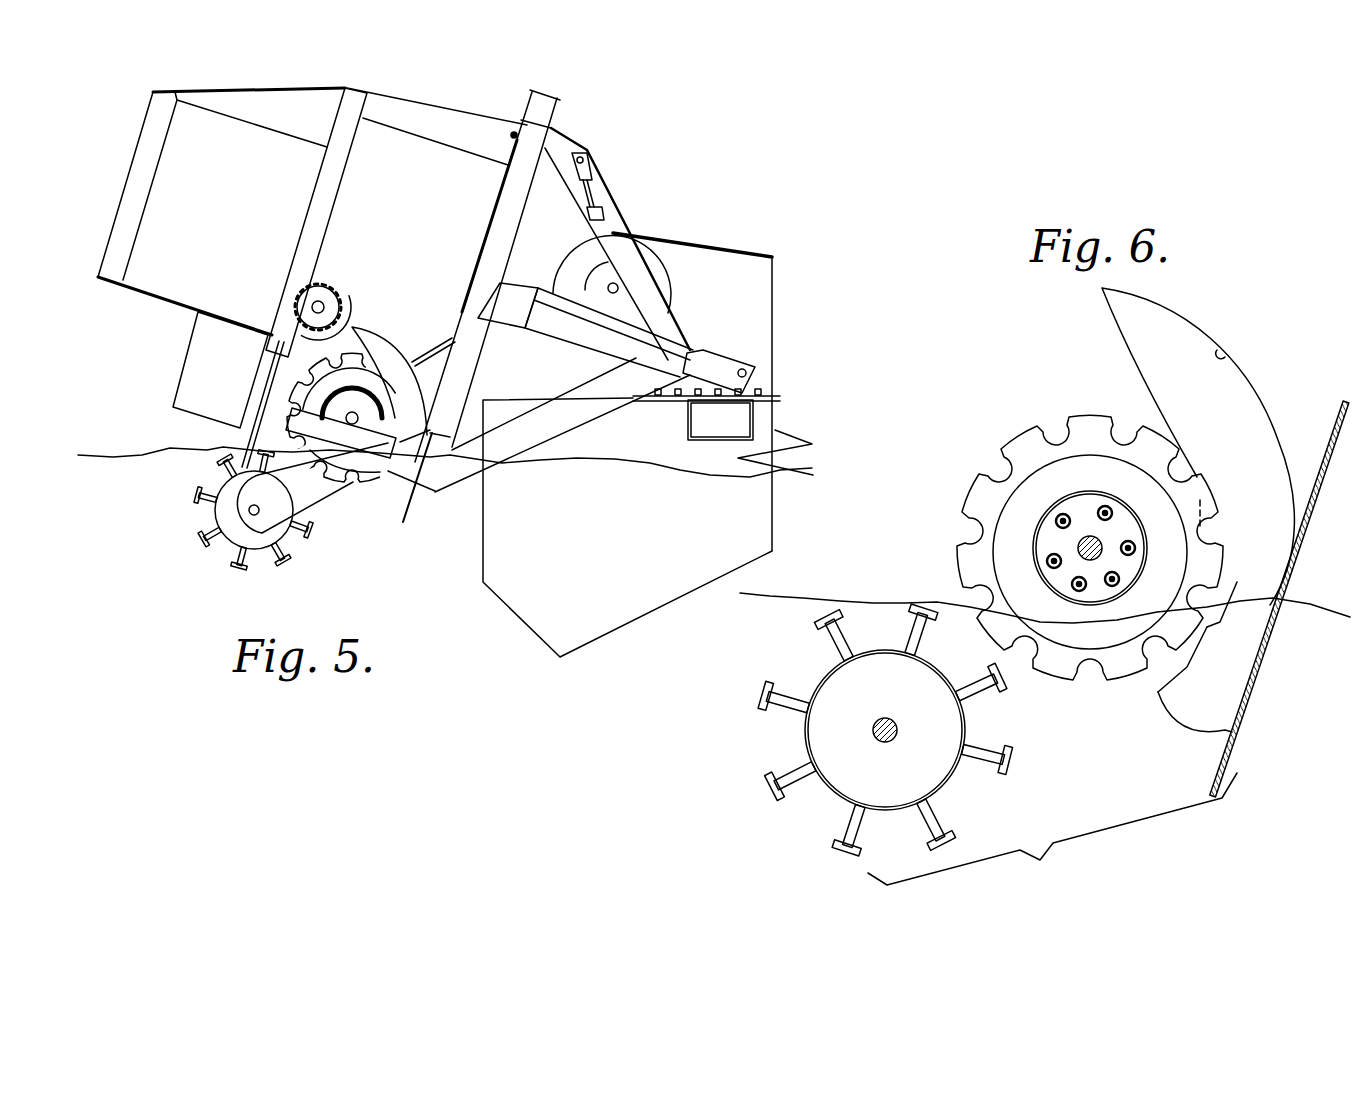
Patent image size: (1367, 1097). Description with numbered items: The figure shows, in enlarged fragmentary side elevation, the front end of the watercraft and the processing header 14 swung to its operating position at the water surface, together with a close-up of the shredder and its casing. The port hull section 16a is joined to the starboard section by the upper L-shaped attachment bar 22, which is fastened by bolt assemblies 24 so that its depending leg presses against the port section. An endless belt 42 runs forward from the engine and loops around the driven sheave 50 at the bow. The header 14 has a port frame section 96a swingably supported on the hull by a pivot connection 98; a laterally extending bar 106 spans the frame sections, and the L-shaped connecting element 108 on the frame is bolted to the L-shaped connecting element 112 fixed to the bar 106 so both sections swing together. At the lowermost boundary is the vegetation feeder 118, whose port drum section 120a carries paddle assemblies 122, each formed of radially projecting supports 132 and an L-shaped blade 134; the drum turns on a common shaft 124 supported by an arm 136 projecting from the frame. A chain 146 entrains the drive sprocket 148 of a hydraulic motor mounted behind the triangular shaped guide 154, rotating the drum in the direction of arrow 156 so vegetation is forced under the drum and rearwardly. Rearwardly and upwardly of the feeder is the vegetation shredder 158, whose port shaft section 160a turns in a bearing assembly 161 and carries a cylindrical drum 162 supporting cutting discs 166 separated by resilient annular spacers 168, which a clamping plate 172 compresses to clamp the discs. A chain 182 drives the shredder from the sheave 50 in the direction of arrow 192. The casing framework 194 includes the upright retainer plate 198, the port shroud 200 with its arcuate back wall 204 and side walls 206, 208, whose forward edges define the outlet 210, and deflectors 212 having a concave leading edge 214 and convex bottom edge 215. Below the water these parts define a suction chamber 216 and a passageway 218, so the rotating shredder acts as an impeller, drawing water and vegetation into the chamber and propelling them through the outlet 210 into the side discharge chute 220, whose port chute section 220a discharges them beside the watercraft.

In FIG. 5, the processing header 14 is at (570, 93).
In FIG. 5, the port hull section 16a is at (766, 432).
In FIG. 5, the upper L-shaped attachment bar 22 is at (772, 397).
In FIG. 5, the bolt assemblies 24 is at (757, 390).
In FIG. 5, the endless belt 42 is at (690, 242).
In FIG. 5, the driven sheave 50 is at (665, 282).
In FIG. 5, the port frame section 96a is at (385, 105).
In FIG. 5, the pivot connection 98 is at (739, 370).
In FIG. 5, the laterally extending bar 106 is at (549, 122).
In FIG. 5, the L-shaped connecting element 108 is at (521, 140).
In FIG. 5, the L-shaped connecting element 112 is at (514, 130).
In FIG. 5, the vegetation feeder 118 is at (228, 544).
In FIG. 6, the vegetation feeder 118 is at (1000, 773).
In FIG. 6, the port drum section 120a is at (967, 730).
In FIG. 5, the paddle assemblies 122 is at (194, 500).
In FIG. 6, the paddle assemblies 122 is at (827, 635).
In FIG. 5, the common shaft 124 is at (256, 520).
In FIG. 6, the common shaft 124 is at (882, 743).
In FIG. 6, the radially projecting support 132 is at (848, 823).
In FIG. 6, the L-shaped blade 134 is at (840, 845).
In FIG. 5, the arm 136 is at (300, 502).
In FIG. 5, the chain 146 is at (264, 393).
In FIG. 5, the drive sprocket 148 is at (311, 296).
In FIG. 5, the triangular shaped guide 154 is at (183, 405).
In FIG. 6, the arrow 156 is at (838, 722).
In FIG. 5, the vegetation shredder 158 is at (348, 487).
In FIG. 6, the vegetation shredder 158 is at (1073, 703).
In FIG. 6, the port shaft section 160a is at (1091, 560).
In FIG. 5, the bearing assembly 161 is at (415, 398).
In FIG. 6, the cylindrical drum 162 is at (1117, 500).
In FIG. 5, the cutting discs 166 is at (297, 378).
In FIG. 6, the cutting discs 166 is at (968, 588).
In FIG. 6, the annular spacers 168 is at (1067, 470).
In FIG. 5, the clamping plate 172 is at (366, 378).
In FIG. 5, the chain 182 is at (450, 340).
In FIG. 6, the arrow 192 is at (980, 413).
In FIG. 5, the casing framework 194 is at (428, 506).
In FIG. 6, the casing framework 194 is at (1295, 558).
In FIG. 5, the retainer plate 198 is at (408, 512).
In FIG. 6, the retainer plate 198 is at (1252, 673).
In FIG. 5, the port shroud 200 is at (358, 326).
In FIG. 6, the port shroud 200 is at (1180, 312).
In FIG. 6, the arcuate back wall 204 is at (1224, 354).
In FIG. 5, the side wall 206 is at (428, 357).
In FIG. 6, the side wall 208 is at (1257, 424).
In FIG. 6, the outlet 210 is at (1105, 323).
In FIG. 5, the deflectors 212 is at (393, 500).
In FIG. 6, the deflectors 212 is at (1253, 628).
In FIG. 6, the concave leading edge 214 is at (1183, 667).
In FIG. 6, the convex bottom edge 215 is at (1177, 722).
In FIG. 6, the suction chamber 216 is at (1200, 745).
In FIG. 6, the passageway 218 is at (1248, 532).
In FIG. 5, the side discharge chute 220 is at (128, 140).
In FIG. 5, the port chute section 220a is at (150, 288).